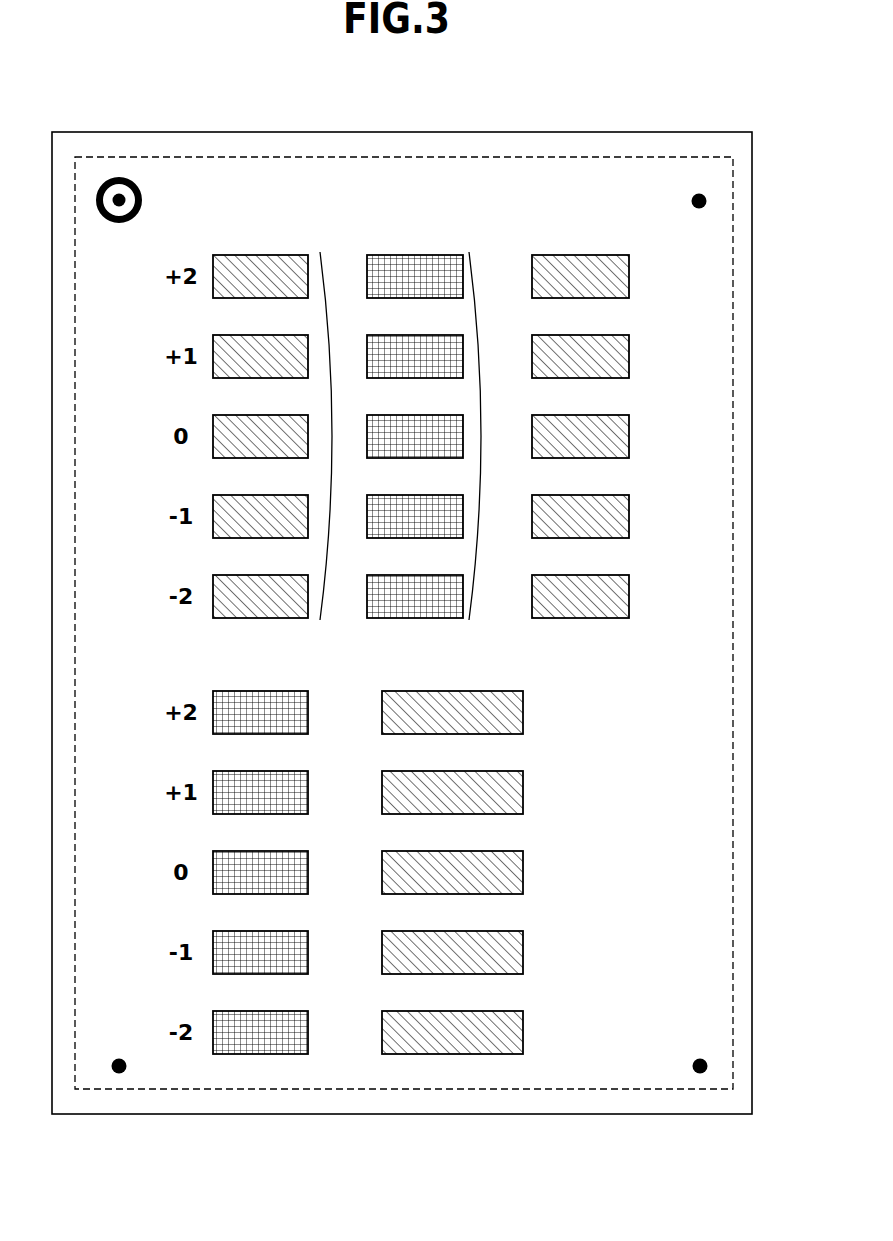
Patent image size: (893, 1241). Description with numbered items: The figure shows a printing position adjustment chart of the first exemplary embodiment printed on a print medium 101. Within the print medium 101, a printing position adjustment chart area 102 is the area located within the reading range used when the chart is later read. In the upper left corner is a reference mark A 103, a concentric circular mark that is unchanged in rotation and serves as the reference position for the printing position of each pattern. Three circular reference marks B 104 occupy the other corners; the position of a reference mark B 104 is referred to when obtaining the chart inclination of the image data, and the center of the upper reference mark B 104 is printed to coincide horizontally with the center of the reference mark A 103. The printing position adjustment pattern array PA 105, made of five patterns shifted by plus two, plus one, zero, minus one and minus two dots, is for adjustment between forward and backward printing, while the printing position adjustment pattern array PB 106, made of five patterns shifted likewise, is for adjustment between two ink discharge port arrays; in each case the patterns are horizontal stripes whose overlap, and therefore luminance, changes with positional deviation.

The print medium 101 is at (320, 131).
The printing position adjustment chart area 102 is at (405, 156).
The reference mark A 103 is at (136, 182).
The reference mark B 104 is at (705, 194).
The printing position adjustment pattern array PA 105 is at (329, 281).
The printing position adjustment pattern array PB 106 is at (479, 281).